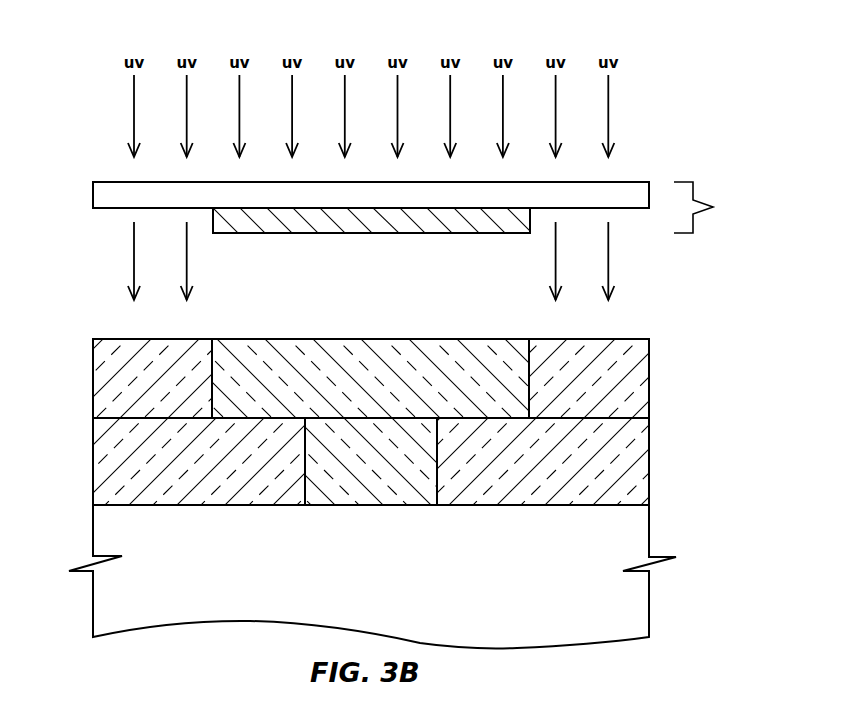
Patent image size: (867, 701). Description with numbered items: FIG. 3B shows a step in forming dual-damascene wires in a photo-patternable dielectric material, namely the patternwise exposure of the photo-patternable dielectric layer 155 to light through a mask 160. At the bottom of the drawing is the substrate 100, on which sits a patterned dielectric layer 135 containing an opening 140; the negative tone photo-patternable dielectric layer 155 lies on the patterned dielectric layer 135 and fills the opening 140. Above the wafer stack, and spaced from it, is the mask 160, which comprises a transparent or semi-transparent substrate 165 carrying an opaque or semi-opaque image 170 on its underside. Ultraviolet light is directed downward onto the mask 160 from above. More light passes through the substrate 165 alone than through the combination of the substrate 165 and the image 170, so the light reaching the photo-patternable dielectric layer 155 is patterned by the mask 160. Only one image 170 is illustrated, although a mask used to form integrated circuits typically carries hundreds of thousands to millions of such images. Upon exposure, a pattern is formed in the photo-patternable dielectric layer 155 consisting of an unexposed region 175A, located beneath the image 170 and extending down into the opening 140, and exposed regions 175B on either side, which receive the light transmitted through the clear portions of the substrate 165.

The substrate 100 is at (523, 631).
The patterned dielectric layer 135 is at (670, 465).
The opening 140 is at (377, 510).
The photo-patternable dielectric layer 155 is at (663, 379).
The mask 160 is at (718, 207).
The substrate of mask 165 is at (113, 193).
The image 170 is at (343, 218).
The unexposed regions 175A is at (337, 478).
The exposed regions 175B is at (178, 398).